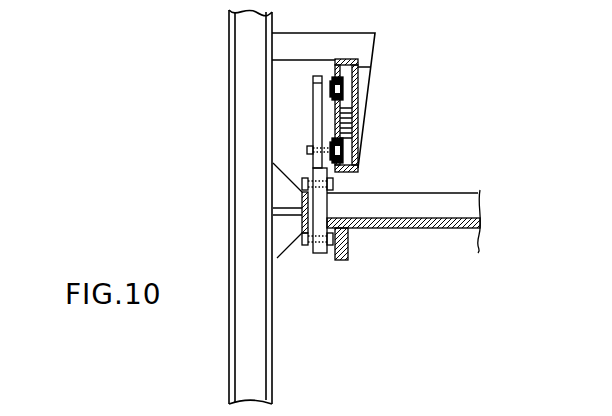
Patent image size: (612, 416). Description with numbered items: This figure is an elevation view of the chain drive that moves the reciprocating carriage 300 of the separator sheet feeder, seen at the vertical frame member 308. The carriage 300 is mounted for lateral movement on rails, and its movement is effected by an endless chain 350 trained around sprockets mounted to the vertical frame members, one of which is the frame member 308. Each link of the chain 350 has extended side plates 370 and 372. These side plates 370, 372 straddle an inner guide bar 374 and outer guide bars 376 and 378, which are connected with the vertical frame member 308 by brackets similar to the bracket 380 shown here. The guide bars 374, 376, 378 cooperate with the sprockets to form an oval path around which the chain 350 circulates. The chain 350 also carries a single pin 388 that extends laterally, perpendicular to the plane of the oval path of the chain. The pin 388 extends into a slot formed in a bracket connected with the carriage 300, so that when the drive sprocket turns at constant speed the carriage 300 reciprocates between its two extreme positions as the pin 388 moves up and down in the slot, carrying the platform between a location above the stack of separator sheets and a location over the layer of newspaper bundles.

The reciprocating carriage 300 is at (435, 227).
The vertical frame member 308 is at (245, 112).
The endless chain 350 is at (345, 89).
The side plate 370 is at (362, 145).
The side plate 372 is at (330, 152).
The inner guide bar 374 is at (360, 115).
The outer guide bar 376 is at (358, 68).
The outer guide bar 378 is at (360, 168).
The bracket 380 is at (322, 47).
The pin 388 is at (307, 150).